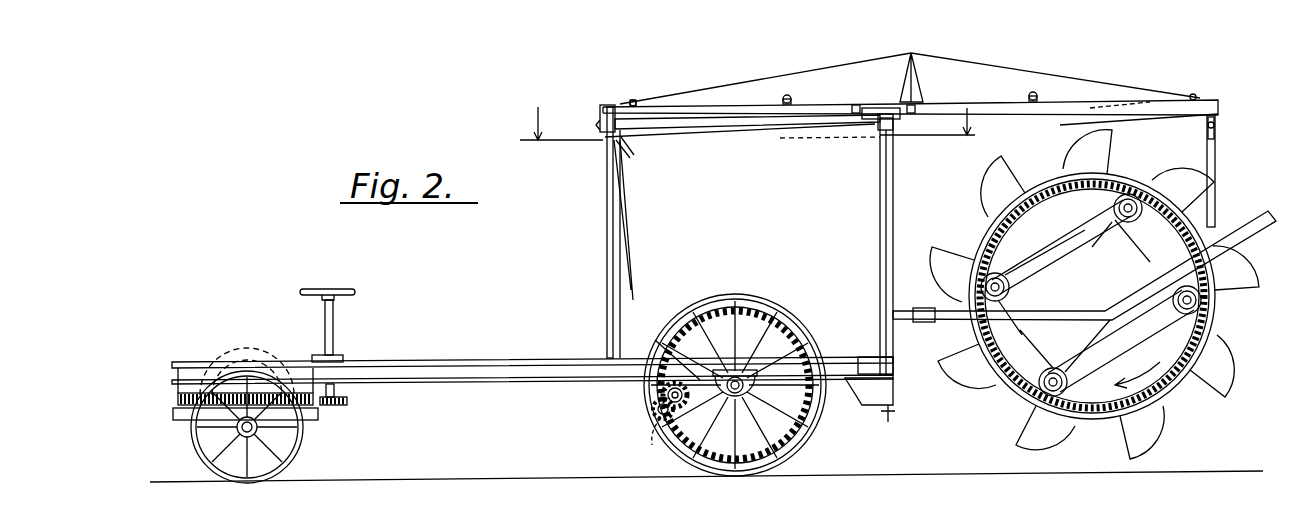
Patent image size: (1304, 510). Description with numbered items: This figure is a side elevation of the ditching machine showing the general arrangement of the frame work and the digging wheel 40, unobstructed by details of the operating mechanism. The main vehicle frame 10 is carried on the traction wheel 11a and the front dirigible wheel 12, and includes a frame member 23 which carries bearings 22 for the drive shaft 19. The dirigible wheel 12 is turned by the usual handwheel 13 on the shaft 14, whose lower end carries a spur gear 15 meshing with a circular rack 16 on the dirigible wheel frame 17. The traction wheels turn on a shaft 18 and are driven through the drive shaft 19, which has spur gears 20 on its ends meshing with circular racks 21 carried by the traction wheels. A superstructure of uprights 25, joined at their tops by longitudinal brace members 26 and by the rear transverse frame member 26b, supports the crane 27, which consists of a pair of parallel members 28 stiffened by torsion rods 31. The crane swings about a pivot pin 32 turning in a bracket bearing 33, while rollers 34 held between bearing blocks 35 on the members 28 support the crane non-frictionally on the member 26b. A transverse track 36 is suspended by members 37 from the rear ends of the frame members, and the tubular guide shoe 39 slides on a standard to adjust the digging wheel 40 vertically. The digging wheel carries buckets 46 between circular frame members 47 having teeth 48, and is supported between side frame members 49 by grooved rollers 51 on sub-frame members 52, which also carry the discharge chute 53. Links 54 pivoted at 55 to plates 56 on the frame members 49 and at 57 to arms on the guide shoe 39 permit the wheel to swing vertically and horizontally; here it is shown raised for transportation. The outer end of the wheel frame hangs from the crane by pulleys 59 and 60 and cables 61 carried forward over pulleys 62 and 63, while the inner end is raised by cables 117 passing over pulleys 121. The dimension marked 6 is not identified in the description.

The main vehicle frame 10 is at (463, 385).
The frame member 23 is at (441, 362).
The front dirigible wheel 12 is at (262, 478).
The handwheel 13 is at (330, 289).
The shaft 14 is at (334, 330).
The spur gear 15 is at (342, 403).
The circular rack 16 is at (290, 400).
The dirigible wheel frame 17 is at (180, 420).
The shaft 18 is at (758, 390).
The drive shaft 19 is at (662, 398).
The spur gears 20 is at (656, 412).
The circular racks 21 is at (652, 445).
The bearings 22 is at (665, 348).
The traction wheel 11a is at (770, 300).
The uprights 25 is at (607, 243).
The longitudinal brace members 26 is at (775, 127).
The rear transverse frame member 26b is at (878, 126).
The crane 27 is at (690, 106).
The parallel members 28 is at (1137, 106).
The torsion rods 31 is at (1003, 68).
The pivot pin 32 is at (605, 106).
The bracket bearing 33 is at (600, 128).
The rollers 34 is at (888, 119).
The bearing blocks 35 is at (857, 105).
The track 36 is at (888, 422).
The members 37 is at (893, 392).
The tubular guide shoe 39 is at (880, 293).
The digging wheel 40 is at (1218, 364).
The buckets 46 is at (1094, 294).
The circular frame members 47 is at (1232, 285).
The teeth 48 is at (1135, 420).
The side frame members 49 is at (1262, 222).
The rollers 51 is at (1125, 222).
The sub-frame members 52 is at (1070, 246).
The discharge chute 53 is at (1074, 291).
The links 54 is at (900, 311).
The pivotal connection 55 is at (926, 308).
The plates 56 is at (967, 362).
The pivotal connection 57 is at (893, 313).
The pulley 59 is at (1215, 232).
The pulley 60 is at (1215, 122).
The cables 61 is at (612, 300).
The pulleys 62 is at (790, 95).
The pulleys 63 is at (606, 152).
The cables 117 is at (723, 135).
The pulleys 121 is at (634, 155).
The dimension 6 is at (751, 119).